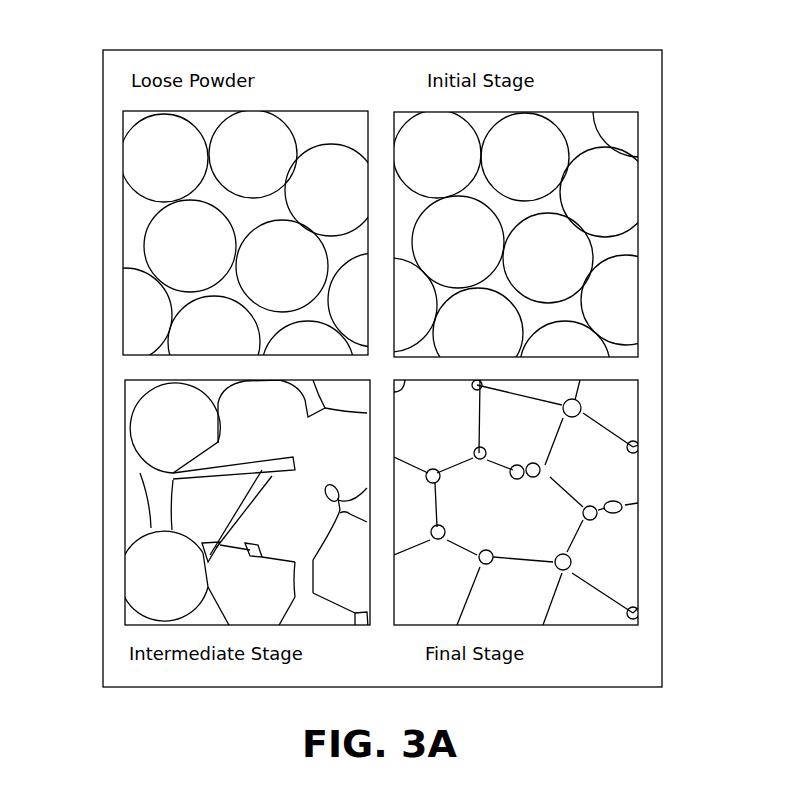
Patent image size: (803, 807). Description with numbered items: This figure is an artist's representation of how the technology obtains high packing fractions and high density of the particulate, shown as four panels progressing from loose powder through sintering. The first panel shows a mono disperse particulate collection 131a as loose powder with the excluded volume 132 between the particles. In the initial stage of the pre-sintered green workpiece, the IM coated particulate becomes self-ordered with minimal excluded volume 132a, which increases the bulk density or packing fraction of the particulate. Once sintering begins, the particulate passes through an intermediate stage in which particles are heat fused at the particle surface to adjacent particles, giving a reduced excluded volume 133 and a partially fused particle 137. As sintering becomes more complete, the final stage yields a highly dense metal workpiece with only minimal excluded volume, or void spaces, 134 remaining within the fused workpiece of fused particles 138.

The mono disperse particulate collection 131a is at (160, 263).
The excluded volume 132 is at (262, 207).
The excluded volume 132a is at (627, 245).
The reduced excluded volume 133 is at (170, 480).
The excluded volume (void spaces) 134 is at (547, 470).
The partially fused particle 137 is at (145, 573).
The fused particles 138 is at (620, 560).